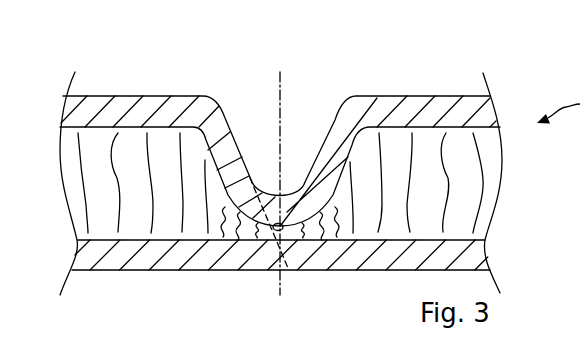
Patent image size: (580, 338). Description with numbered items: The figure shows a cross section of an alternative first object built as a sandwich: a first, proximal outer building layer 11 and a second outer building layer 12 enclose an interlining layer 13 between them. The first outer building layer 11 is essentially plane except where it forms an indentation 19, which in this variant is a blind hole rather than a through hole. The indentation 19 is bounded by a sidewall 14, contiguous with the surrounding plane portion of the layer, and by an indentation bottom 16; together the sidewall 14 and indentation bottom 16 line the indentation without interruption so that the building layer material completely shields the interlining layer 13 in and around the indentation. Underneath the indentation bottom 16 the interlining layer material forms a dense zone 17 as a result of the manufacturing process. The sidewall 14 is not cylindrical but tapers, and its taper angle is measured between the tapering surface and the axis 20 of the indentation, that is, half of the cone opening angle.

The first outer building layer 11 is at (480, 105).
The second outer building layer 12 is at (465, 260).
The interlining layer 13 is at (480, 183).
The sidewall 14 is at (324, 140).
The indentation bottom 16 is at (291, 226).
The dense zone 17 is at (240, 222).
The indentation 19 is at (265, 122).
The axis 20 is at (282, 77).